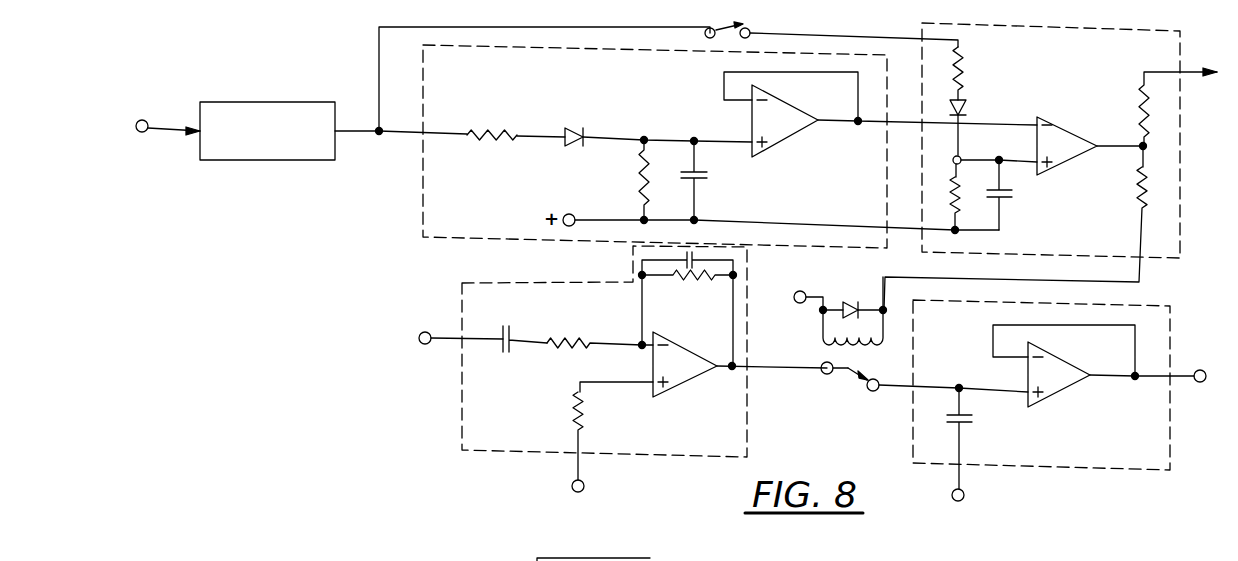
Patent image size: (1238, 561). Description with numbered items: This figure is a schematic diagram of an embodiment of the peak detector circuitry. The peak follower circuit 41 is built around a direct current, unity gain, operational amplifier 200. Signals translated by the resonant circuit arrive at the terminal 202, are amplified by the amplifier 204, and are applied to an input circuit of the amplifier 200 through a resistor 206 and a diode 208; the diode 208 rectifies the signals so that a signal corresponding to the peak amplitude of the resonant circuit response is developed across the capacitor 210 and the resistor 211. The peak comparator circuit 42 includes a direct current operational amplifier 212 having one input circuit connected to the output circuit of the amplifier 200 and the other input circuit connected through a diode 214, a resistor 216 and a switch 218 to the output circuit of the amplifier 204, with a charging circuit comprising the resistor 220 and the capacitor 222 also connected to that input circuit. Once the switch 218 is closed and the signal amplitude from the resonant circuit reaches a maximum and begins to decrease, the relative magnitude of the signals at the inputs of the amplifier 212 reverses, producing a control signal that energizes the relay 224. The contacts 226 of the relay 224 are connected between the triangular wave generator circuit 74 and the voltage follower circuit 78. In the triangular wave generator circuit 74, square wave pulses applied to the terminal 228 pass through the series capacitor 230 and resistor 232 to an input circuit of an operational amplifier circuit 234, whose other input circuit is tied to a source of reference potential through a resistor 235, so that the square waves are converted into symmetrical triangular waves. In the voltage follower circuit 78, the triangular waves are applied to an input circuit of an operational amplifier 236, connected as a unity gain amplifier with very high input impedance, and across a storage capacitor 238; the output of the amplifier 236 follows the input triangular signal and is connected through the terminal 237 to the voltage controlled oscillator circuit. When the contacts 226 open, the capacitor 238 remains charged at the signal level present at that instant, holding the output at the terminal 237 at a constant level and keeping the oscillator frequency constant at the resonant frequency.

The terminal 202 is at (143, 120).
The amplifier 204 is at (310, 102).
The resistor 206 is at (490, 128).
The diode 208 is at (576, 146).
The capacitor 210 is at (706, 185).
The resistor 211 is at (640, 185).
The operational amplifier 200 is at (750, 112).
The switch 218 is at (720, 30).
The resistor 216 is at (965, 78).
The diode 214 is at (966, 107).
The operational amplifier 212 is at (1050, 189).
The resistor 220 is at (962, 185).
The capacitor 222 is at (1006, 198).
The peak follower circuit 41 is at (420, 215).
The peak comparator circuit 42 is at (1178, 262).
The terminal 228 is at (421, 344).
The series capacitor 230 is at (510, 330).
The resistor 232 is at (571, 338).
The operational amplifier circuit 234 is at (684, 342).
The resistor 235 is at (586, 418).
The triangular wave generator circuit 74 is at (460, 440).
The relay 224 is at (822, 345).
The contacts 226 is at (850, 372).
The operational amplifier 236 is at (1060, 386).
The terminal 237 is at (1199, 383).
The storage capacitor 238 is at (975, 417).
The voltage follower circuit 78 is at (1100, 470).